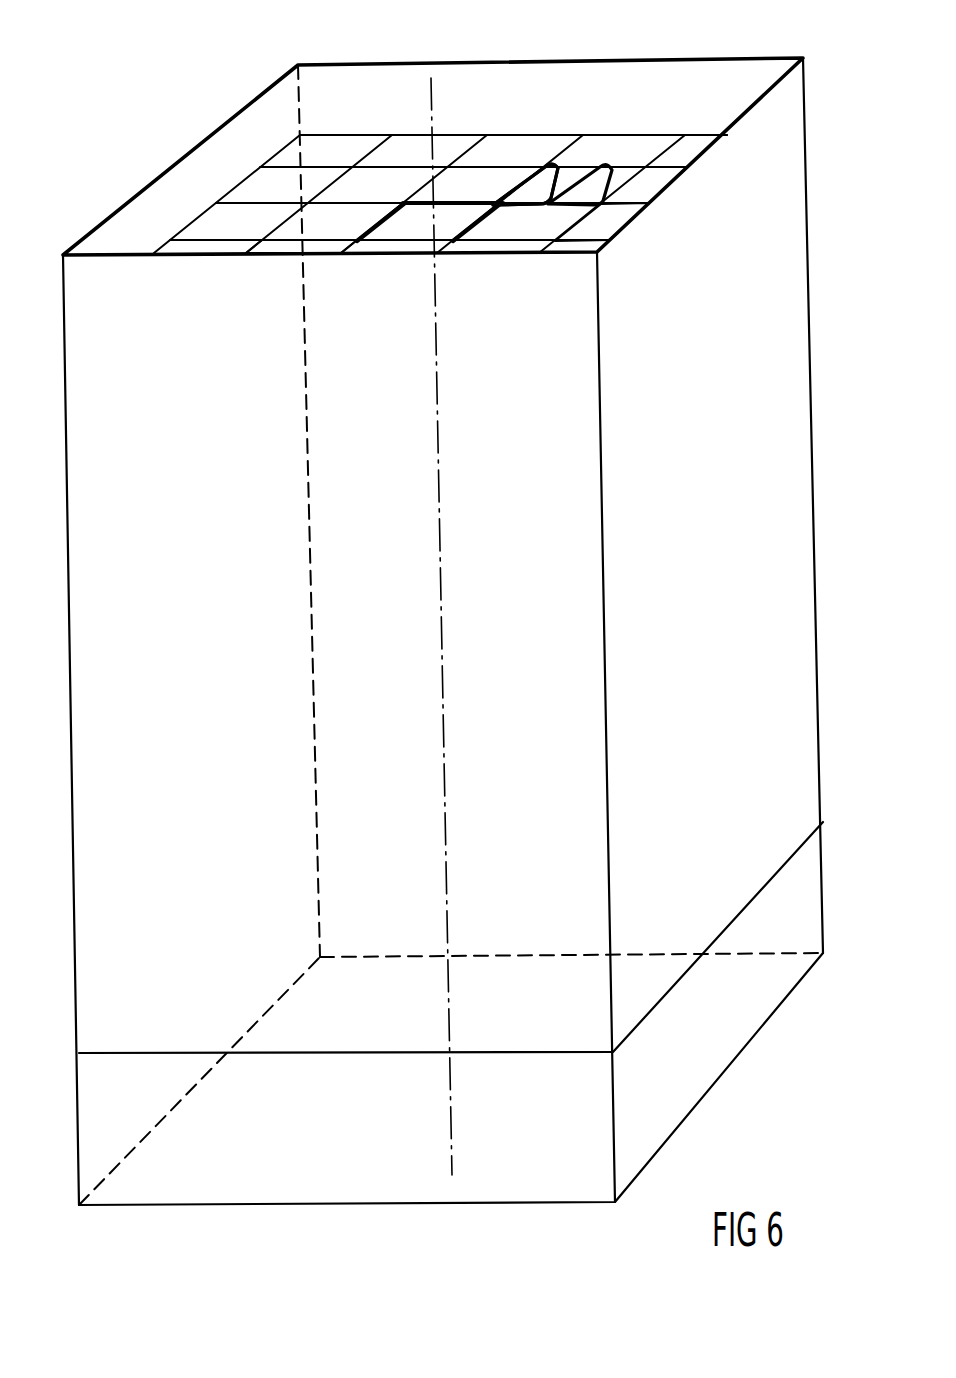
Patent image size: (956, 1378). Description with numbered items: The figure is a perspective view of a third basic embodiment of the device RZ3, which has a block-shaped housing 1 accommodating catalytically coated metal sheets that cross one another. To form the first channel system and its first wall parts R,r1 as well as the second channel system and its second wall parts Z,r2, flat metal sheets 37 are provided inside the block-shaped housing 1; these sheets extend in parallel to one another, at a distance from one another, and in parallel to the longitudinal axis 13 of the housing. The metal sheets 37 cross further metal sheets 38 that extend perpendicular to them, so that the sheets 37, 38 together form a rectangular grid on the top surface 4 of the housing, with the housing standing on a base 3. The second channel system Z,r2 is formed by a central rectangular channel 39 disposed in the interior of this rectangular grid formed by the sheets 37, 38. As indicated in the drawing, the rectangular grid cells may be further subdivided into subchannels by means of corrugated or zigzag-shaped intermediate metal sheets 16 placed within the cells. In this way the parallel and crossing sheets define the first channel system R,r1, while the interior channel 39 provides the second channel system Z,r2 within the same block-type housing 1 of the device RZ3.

The block-shaped housing 1 is at (800, 495).
The base plate 3 is at (303, 1207).
The top surface 4 is at (472, 82).
The longitudinal axis 13 is at (441, 527).
The corrugated or zigzag-shaped intermediate metal sheets 16 is at (557, 163).
The flat metal sheets 37 is at (519, 128).
The further metal sheets 38 is at (583, 220).
The channel 39 is at (397, 245).
The device RZ3 is at (191, 150).
The second channel system and second wall parts Z,r2 is at (423, 203).
The first channel system and first wall parts R,r1 is at (590, 165).